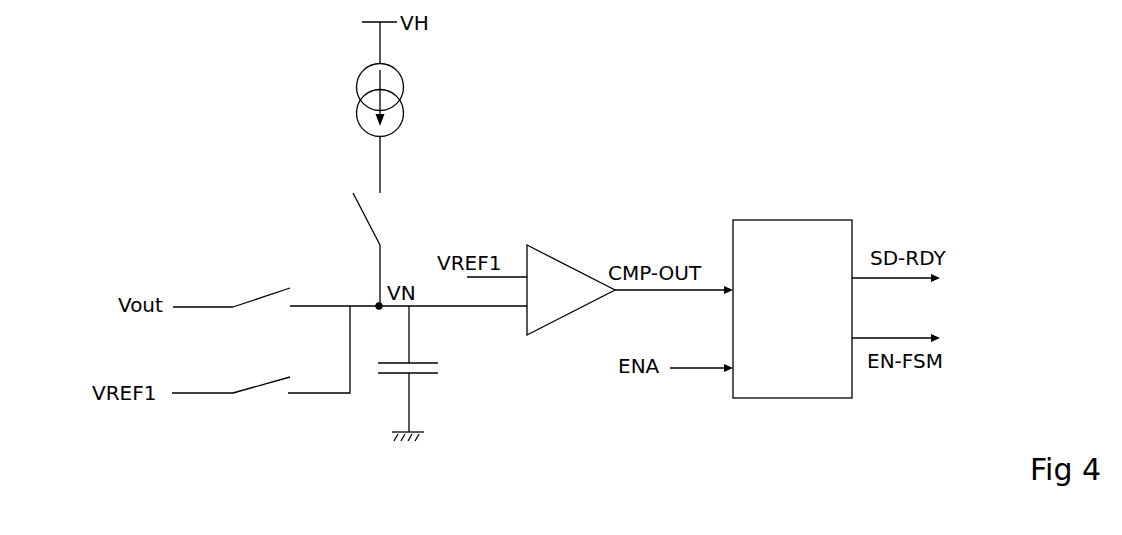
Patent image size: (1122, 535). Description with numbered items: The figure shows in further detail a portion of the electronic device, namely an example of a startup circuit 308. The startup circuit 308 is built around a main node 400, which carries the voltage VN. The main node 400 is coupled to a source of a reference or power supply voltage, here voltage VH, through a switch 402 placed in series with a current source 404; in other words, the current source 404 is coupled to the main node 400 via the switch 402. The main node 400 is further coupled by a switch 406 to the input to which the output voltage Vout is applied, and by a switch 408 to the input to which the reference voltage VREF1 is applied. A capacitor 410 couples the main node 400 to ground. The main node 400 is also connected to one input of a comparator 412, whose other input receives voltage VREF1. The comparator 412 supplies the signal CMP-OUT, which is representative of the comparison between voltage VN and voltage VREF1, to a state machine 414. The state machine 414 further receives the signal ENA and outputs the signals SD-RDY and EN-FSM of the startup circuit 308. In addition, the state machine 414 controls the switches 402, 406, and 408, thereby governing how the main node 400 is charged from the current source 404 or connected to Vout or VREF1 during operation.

The startup circuit 308 is at (668, 94).
The main node 400 is at (378, 304).
The switch 402 is at (368, 222).
The current source 404 is at (403, 88).
The switch 406 is at (258, 293).
The switch 408 is at (265, 387).
The capacitor 410 is at (438, 369).
The comparator 412 is at (543, 265).
The state machine 414 is at (815, 220).